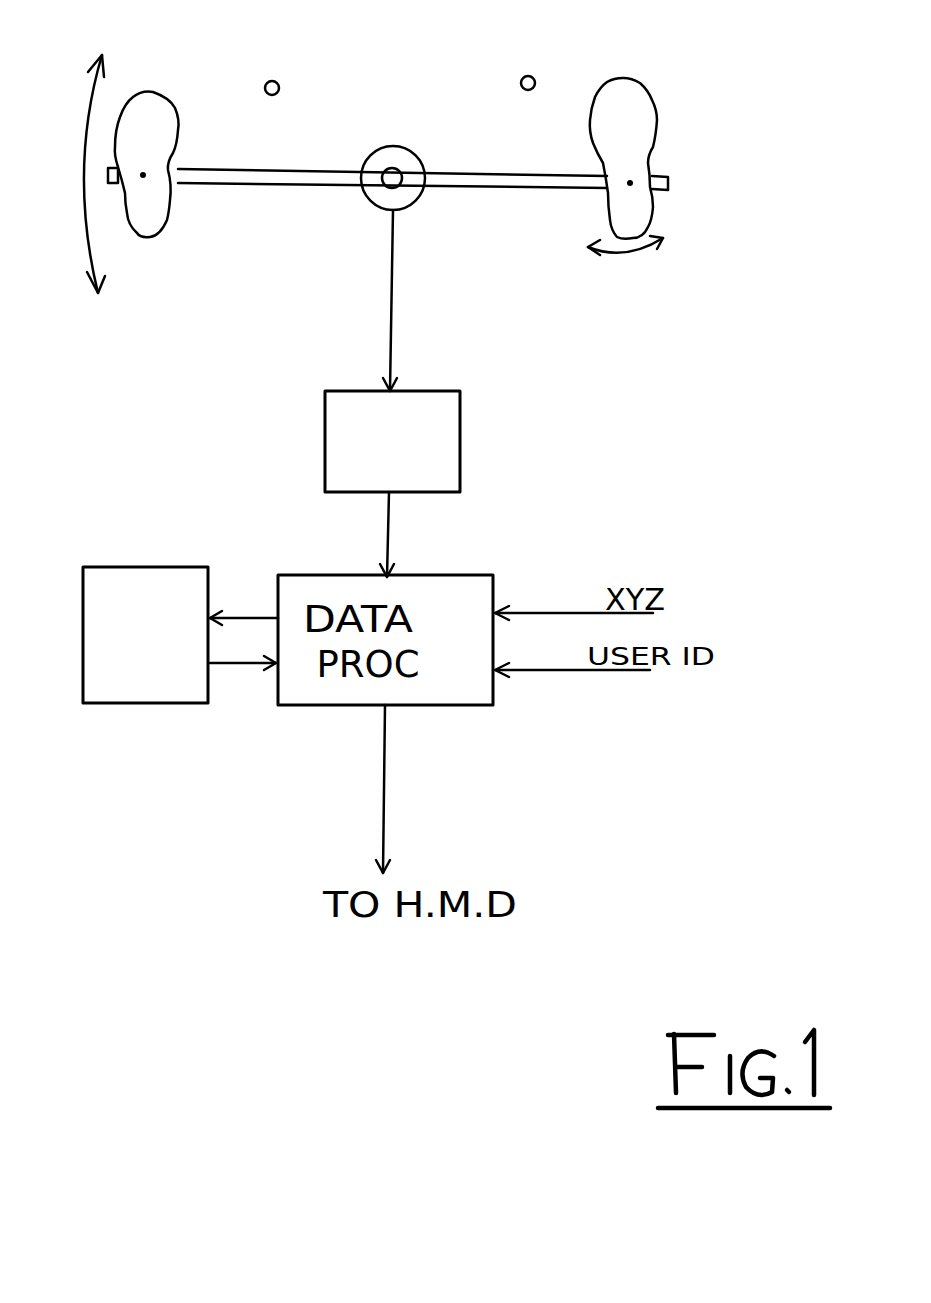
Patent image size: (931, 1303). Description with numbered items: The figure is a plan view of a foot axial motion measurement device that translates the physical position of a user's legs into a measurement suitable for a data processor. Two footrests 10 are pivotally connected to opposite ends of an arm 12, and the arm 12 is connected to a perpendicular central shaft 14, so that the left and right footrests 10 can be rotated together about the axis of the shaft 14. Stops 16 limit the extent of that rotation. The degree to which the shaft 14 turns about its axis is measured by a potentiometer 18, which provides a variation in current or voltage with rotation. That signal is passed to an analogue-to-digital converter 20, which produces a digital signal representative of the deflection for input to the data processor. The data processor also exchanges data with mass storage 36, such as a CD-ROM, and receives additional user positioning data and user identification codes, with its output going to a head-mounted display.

The footrests 10 is at (635, 117).
The arm 12 is at (510, 183).
The central shaft 14 is at (396, 172).
The stops 16 is at (269, 81).
The potentiometer 18 is at (370, 197).
The analogue-to-digital converter 20 is at (453, 428).
The mass storage 36 is at (137, 582).